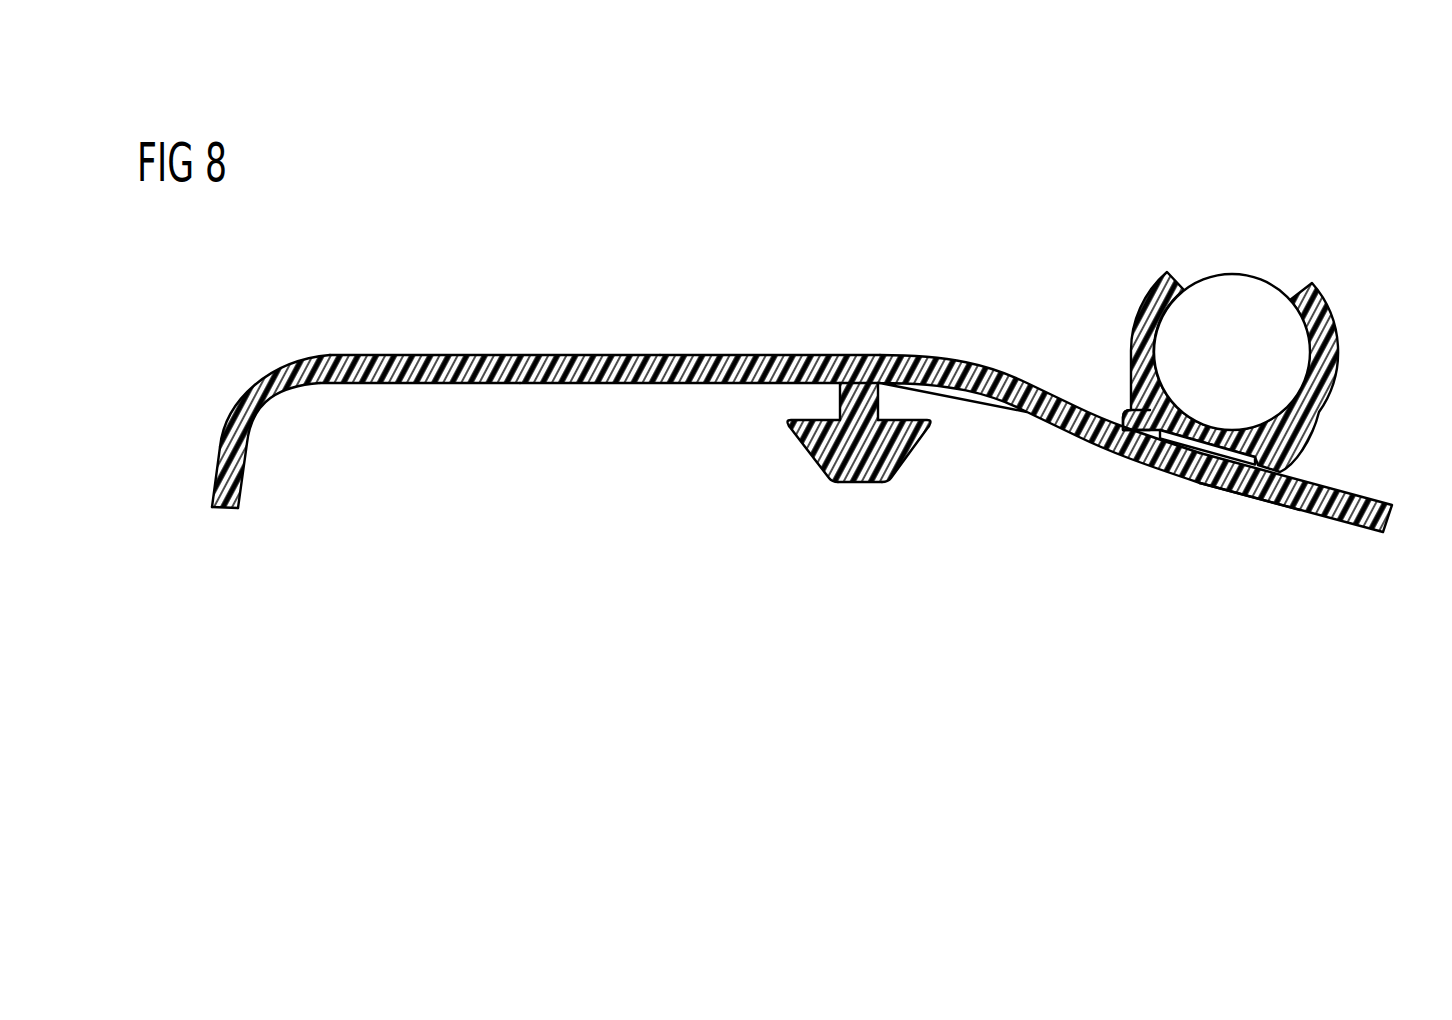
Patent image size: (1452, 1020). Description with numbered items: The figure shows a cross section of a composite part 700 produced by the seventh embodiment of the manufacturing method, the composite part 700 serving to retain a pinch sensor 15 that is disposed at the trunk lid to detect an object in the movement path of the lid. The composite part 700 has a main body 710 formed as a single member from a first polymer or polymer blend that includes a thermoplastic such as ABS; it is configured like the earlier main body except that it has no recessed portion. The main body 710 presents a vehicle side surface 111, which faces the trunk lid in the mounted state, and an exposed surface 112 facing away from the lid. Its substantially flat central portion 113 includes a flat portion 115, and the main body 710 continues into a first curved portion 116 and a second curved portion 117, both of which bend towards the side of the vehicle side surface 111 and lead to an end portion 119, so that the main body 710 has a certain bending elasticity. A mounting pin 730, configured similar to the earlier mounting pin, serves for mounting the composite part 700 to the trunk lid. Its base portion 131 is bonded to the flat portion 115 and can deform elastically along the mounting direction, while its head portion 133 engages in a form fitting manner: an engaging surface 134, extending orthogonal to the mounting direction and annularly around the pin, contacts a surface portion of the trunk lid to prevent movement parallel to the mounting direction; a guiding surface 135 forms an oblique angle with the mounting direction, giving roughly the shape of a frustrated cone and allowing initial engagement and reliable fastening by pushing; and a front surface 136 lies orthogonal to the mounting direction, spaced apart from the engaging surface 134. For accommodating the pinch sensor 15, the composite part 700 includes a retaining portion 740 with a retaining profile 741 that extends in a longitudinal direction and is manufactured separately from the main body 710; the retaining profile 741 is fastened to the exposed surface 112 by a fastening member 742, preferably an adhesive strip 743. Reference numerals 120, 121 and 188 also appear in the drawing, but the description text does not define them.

The composite part 700 is at (511, 220).
The main body 710 is at (455, 343).
The mounting pin 730 is at (823, 504).
The retaining portion 740 is at (1306, 232).
The retaining profile 741 is at (1330, 325).
The fastening member 742 is at (1198, 460).
The adhesive strip 743 is at (1243, 487).
The pinch sensor 15 is at (1213, 298).
The vehicle side surface 111 is at (333, 388).
The exposed surface 112 is at (598, 352).
The central portion 113 is at (722, 353).
The flat portion 115 is at (588, 382).
The first curved portion 116 is at (996, 350).
The second curved portion 117 is at (231, 382).
The end portion 119 is at (1406, 527).
The flange leg 120 is at (218, 467).
The end face 121 is at (223, 523).
The base portion 131 is at (880, 405).
The head portion 133 is at (858, 458).
The engaging surface 134 is at (815, 407).
The guiding surface 135 is at (805, 455).
The front surface 136 is at (878, 484).
The projection 188 is at (1130, 455).